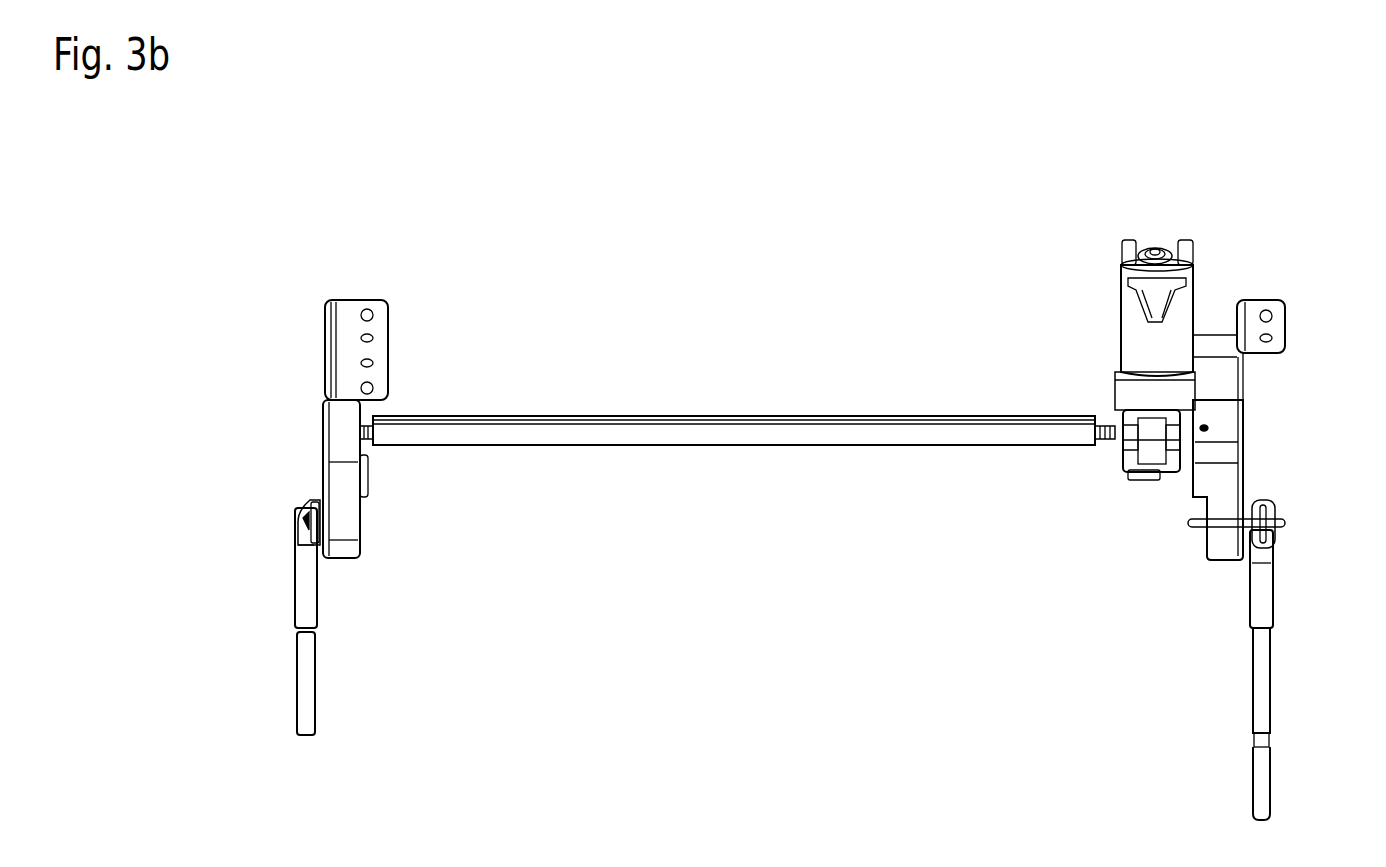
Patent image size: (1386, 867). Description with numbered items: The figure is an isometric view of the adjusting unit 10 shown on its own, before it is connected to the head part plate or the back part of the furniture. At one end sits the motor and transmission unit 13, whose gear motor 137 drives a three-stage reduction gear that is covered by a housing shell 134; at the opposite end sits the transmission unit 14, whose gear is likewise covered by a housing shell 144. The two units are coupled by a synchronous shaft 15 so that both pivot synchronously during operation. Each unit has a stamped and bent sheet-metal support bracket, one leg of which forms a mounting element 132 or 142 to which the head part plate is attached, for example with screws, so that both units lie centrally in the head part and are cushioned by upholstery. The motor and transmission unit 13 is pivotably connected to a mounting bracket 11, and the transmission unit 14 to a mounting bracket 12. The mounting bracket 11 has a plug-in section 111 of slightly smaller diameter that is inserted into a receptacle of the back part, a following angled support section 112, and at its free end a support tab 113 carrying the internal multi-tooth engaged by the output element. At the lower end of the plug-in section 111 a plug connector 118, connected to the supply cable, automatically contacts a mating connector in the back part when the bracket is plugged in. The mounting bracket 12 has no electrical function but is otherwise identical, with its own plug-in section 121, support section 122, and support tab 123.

The adjusting unit 10 is at (686, 728).
The mounting bracket 11 is at (1259, 683).
The mounting bracket 12 is at (300, 621).
The motor and transmission unit 13 is at (1098, 302).
The transmission unit 14 is at (383, 540).
The synchronous shaft 15 is at (632, 440).
The plug-in section 111 is at (1262, 680).
The support section 112 is at (1263, 578).
The support tab 113 is at (1262, 506).
The plug connector 118 is at (1260, 778).
The plug-in section 121 is at (297, 697).
The support section 122 is at (297, 588).
The support tab 123 is at (305, 505).
The mounting element 132 is at (1272, 328).
The housing shell 134 is at (1227, 487).
The gear motor 137 is at (1153, 433).
The mounting element 142 is at (348, 312).
The housing shell 144 is at (345, 512).